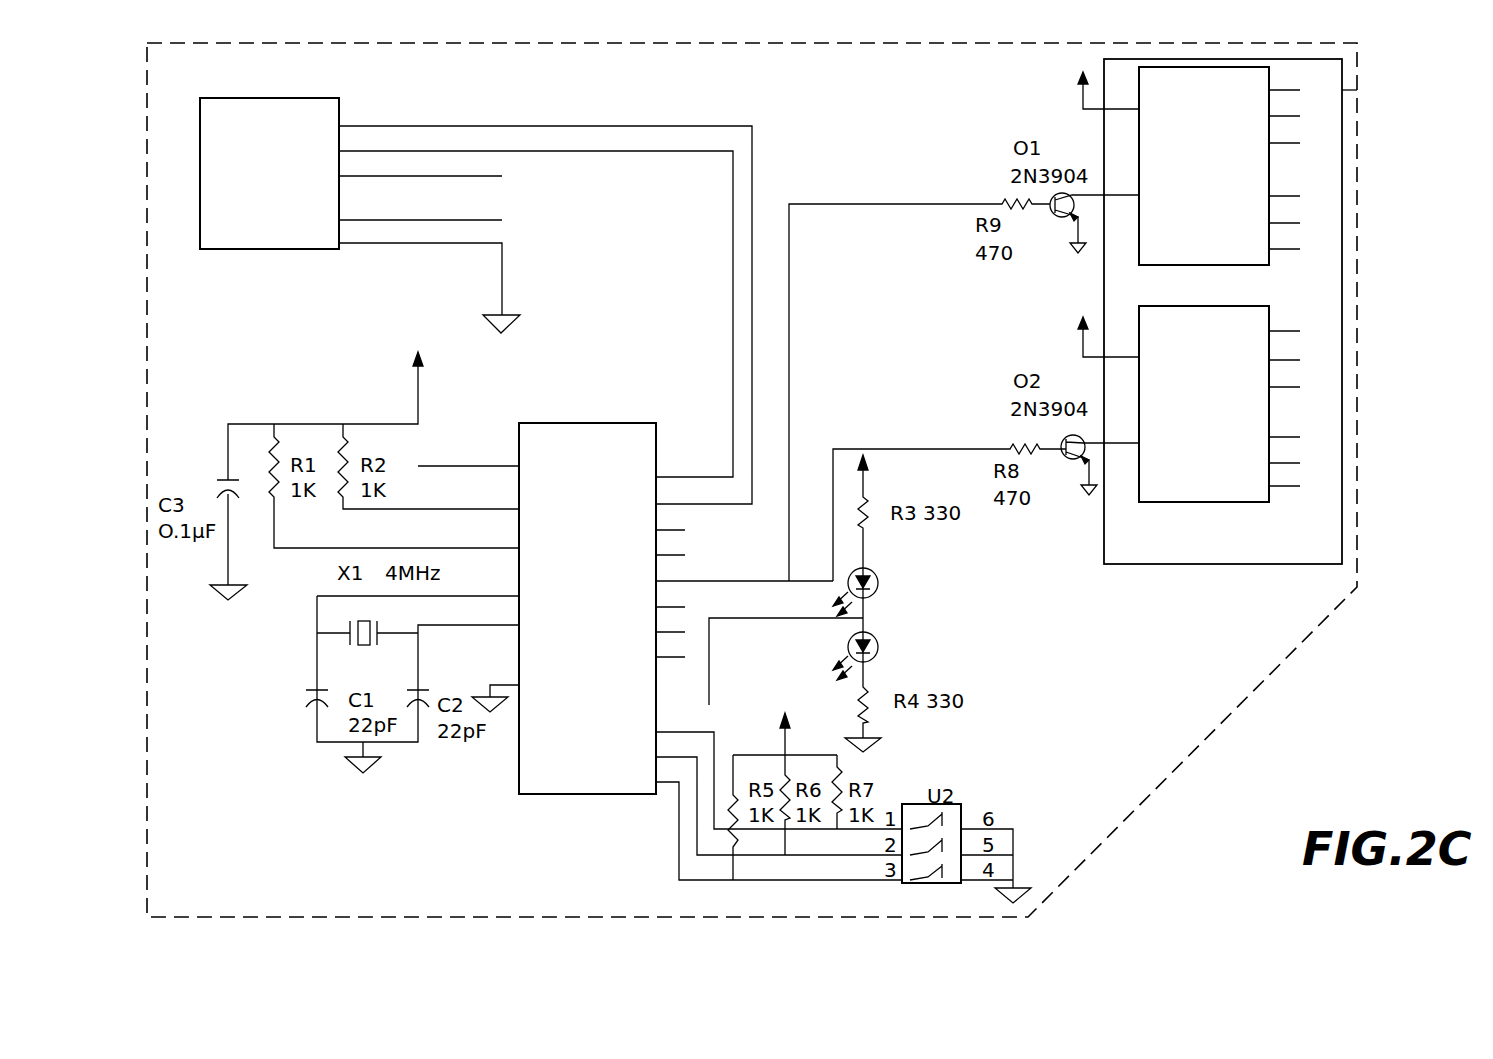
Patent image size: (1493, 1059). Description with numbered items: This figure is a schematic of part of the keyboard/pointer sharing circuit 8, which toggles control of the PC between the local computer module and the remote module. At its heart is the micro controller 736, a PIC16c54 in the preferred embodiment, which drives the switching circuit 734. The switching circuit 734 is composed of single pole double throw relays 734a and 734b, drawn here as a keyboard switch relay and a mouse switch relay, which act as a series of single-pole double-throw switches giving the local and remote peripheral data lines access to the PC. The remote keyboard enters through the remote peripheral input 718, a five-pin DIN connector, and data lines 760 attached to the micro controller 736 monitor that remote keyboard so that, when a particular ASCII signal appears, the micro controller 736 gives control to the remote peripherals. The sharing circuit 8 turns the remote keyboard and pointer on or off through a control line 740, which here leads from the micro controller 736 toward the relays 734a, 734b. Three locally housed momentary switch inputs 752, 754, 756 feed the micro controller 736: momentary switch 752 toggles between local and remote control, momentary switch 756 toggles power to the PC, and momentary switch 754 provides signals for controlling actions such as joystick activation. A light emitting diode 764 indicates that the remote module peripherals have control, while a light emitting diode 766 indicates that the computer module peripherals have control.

The keyboard/pointer sharing circuit 8 is at (1203, 740).
The remote peripheral input 718 is at (355, 198).
The data lines 760 is at (545, 294).
The micro controller 736 is at (587, 611).
The control line 740 is at (853, 390).
The switching circuit 734 is at (1358, 92).
The single pole double throw relay 734a is at (1207, 181).
The single pole double throw relay 734b is at (1210, 419).
The light emitting diode 764 is at (950, 589).
The light emitting diode 766 is at (950, 656).
The momentary switch 752 is at (935, 822).
The momentary switch 754 is at (928, 830).
The momentary switch 756 is at (923, 882).